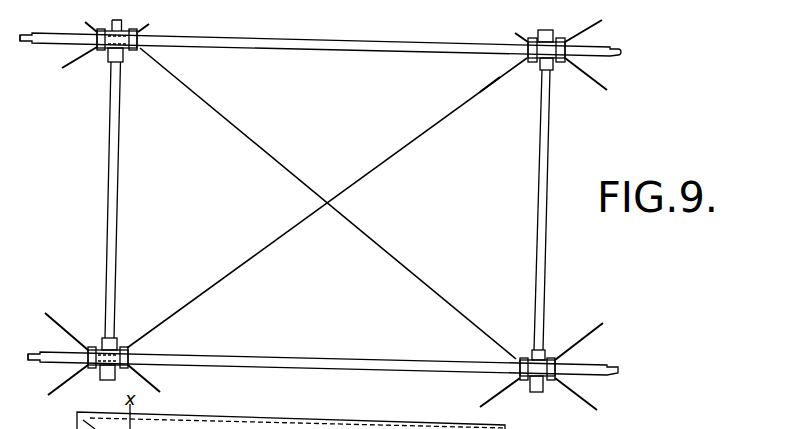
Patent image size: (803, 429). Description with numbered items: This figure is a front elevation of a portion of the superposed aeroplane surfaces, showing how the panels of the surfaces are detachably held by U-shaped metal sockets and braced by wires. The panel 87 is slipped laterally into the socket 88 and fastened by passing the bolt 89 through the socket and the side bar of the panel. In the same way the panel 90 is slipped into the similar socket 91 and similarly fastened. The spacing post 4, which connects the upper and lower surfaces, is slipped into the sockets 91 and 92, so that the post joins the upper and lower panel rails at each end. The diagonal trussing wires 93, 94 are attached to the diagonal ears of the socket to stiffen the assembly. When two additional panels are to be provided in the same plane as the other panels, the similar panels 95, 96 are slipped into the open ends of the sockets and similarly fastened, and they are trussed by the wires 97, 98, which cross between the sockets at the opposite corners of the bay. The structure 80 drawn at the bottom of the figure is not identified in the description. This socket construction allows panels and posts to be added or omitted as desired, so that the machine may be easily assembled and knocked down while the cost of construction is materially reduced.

The spacing post 4 is at (115, 122).
The base frame 80 is at (443, 428).
The panel 87 is at (40, 34).
The socket 88 is at (118, 33).
The bolt 89 is at (106, 32).
The panel 90 is at (53, 357).
The socket 91 is at (125, 57).
The socket 92 is at (114, 339).
The diagonal trussing wire 93 is at (63, 326).
The diagonal trussing wire 94 is at (71, 65).
The panel 95 is at (276, 40).
The panel 96 is at (327, 363).
The trussing wire 97 is at (312, 189).
The trussing wire 98 is at (288, 234).